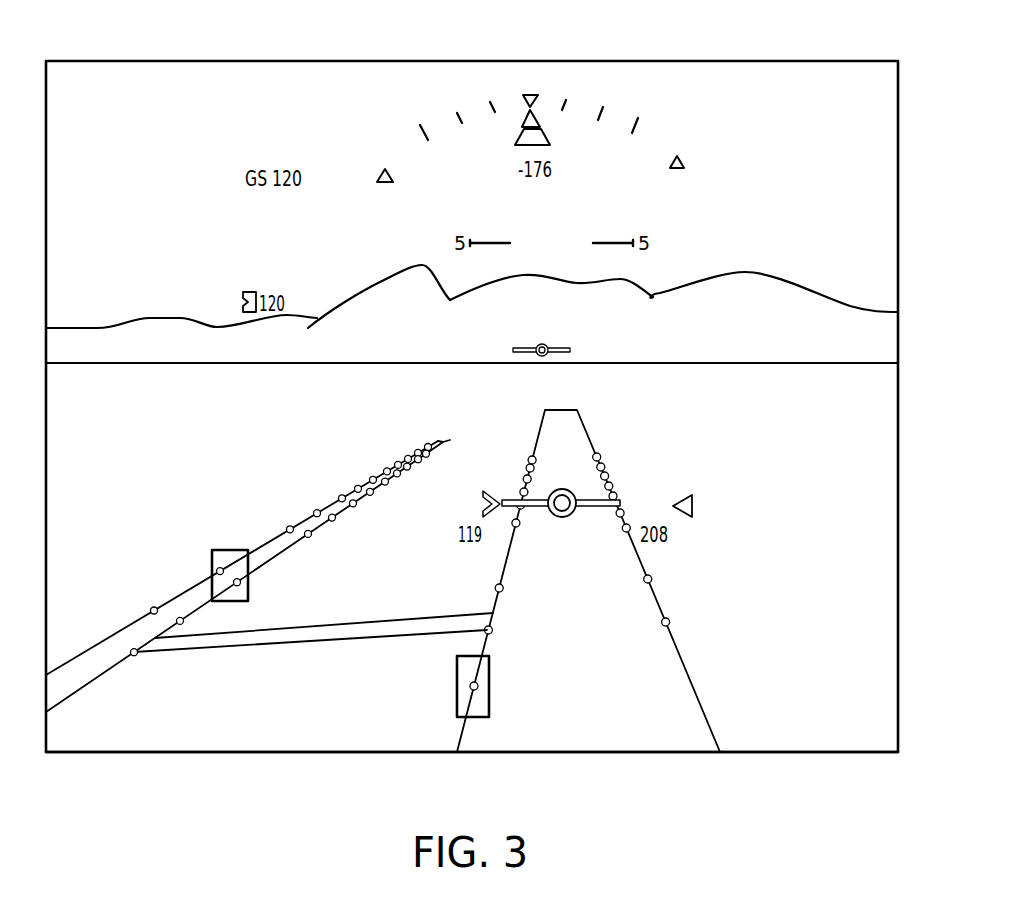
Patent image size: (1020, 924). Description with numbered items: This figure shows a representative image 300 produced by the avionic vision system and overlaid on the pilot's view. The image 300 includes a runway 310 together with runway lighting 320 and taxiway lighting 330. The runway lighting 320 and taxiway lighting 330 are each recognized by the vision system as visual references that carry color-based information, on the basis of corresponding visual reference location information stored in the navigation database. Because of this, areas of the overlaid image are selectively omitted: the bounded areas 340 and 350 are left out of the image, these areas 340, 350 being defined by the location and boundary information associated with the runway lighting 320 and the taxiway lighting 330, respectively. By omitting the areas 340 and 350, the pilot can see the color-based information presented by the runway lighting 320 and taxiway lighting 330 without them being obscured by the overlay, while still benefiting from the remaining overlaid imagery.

The representative image 300 is at (723, 61).
The runway 310 is at (655, 740).
The runway lighting 320 is at (577, 435).
The taxiway lighting 330 is at (333, 505).
The bounded area 340 is at (457, 693).
The bounded area 350 is at (212, 565).